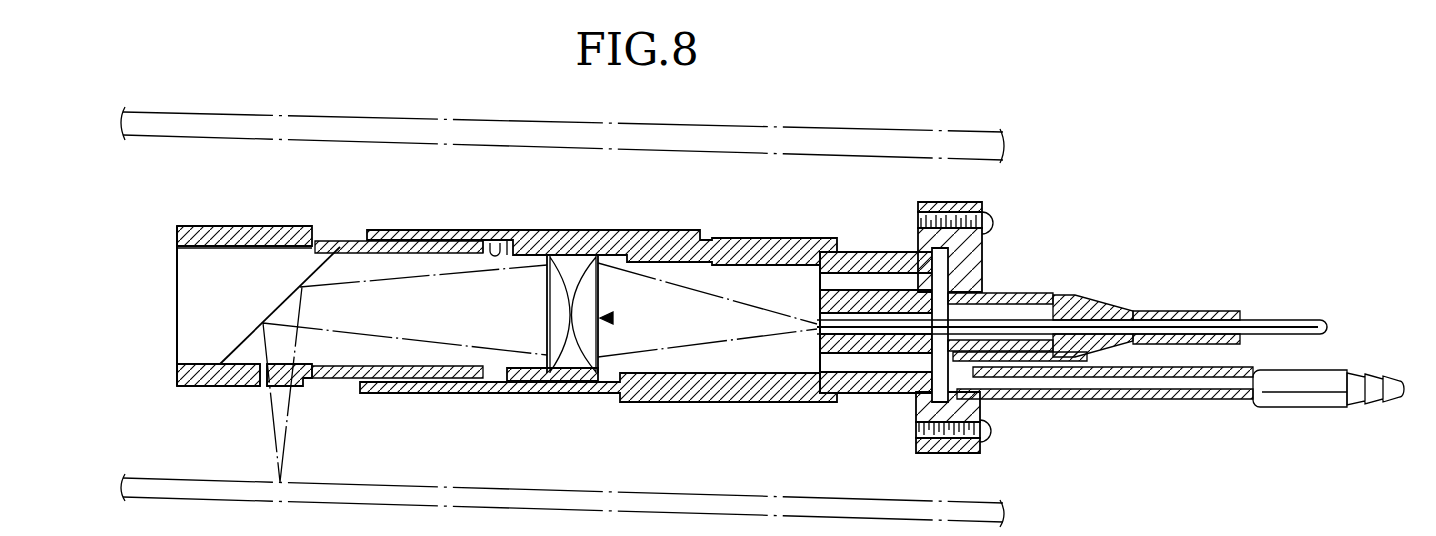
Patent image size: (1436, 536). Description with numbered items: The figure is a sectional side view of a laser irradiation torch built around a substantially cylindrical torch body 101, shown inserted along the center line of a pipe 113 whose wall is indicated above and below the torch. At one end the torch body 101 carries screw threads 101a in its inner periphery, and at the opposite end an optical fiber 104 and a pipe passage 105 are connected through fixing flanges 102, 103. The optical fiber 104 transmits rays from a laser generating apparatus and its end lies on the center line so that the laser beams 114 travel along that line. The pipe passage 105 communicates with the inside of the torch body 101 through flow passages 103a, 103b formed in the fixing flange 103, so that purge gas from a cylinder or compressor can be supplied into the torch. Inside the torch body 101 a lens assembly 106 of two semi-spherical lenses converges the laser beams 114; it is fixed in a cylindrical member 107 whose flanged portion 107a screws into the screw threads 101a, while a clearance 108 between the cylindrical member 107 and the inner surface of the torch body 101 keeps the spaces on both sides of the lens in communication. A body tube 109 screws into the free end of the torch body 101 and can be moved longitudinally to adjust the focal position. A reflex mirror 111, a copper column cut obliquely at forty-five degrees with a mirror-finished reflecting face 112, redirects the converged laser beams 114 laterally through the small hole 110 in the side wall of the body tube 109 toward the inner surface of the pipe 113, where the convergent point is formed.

The torch body 101 is at (652, 255).
The screw threads 101a is at (497, 247).
The fixing flange 102 is at (967, 253).
The fixing flange 103 is at (890, 256).
The flow passage 103a is at (862, 360).
The flow passage 103b is at (860, 282).
The optical fiber 104 is at (1266, 321).
The pipe passage 105 is at (1165, 399).
The lens assembly 106 is at (614, 318).
The cylindrical member 107 is at (570, 255).
The flanged portion 107a is at (513, 368).
The clearance 108 is at (607, 252).
The body tube 109 is at (283, 246).
The small hole 110 is at (263, 384).
The reflex mirror 111 is at (190, 282).
The reflecting face 112 is at (288, 302).
The pipe 113 is at (388, 127).
The laser beams 114 is at (648, 343).